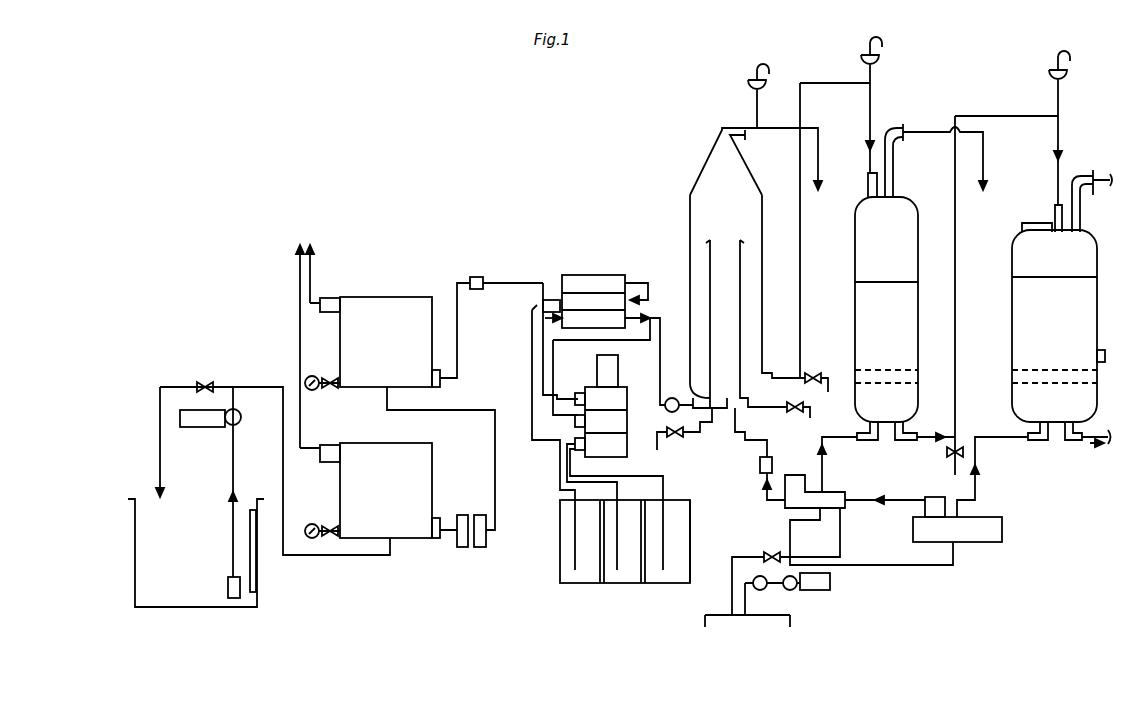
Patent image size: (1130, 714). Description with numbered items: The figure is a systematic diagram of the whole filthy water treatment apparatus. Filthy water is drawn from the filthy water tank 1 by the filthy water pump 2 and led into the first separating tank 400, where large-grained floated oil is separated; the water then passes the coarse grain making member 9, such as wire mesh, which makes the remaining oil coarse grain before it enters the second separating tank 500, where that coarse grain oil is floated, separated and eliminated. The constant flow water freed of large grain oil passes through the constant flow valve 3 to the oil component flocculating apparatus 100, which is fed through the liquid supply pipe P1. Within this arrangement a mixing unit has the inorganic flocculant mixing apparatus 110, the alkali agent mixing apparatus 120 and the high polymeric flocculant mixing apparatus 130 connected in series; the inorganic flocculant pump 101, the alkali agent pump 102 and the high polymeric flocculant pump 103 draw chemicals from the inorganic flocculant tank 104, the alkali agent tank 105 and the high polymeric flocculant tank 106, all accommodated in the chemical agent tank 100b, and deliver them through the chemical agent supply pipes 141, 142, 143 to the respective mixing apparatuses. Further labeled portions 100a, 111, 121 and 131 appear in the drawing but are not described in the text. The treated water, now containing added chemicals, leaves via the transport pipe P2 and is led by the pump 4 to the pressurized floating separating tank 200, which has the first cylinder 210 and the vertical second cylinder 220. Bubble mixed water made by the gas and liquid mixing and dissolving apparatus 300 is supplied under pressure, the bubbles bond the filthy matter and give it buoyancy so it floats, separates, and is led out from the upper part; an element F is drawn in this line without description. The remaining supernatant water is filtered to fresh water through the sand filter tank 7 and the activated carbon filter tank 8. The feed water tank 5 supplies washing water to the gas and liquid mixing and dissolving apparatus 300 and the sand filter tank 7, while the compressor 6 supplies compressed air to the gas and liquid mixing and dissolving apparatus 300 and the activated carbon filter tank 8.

The filthy water tank 1 is at (243, 498).
The filthy water pump 2 is at (241, 414).
The constant flow valve 3 is at (474, 291).
The pump 4 is at (665, 410).
The feed water tank 5 is at (775, 614).
The compressor 6 is at (990, 519).
The sand filter tank 7 is at (878, 312).
The activated carbon filter tank 8 is at (1042, 312).
The coarse grain making member 9 is at (470, 555).
The liquid supply pipe P1 is at (477, 277).
The transport pipe P2 is at (660, 375).
The flow meter F is at (758, 468).
The oil component flocculating apparatus 100 is at (586, 419).
The heat exchanger section 100a is at (617, 262).
The chemical agent tank 100b is at (623, 571).
The inorganic flocculant pump 101 is at (595, 390).
The alkali agent pump 102 is at (553, 414).
The high polymeric flocculant pump 103 is at (568, 462).
The inorganic flocculant tank 104 is at (583, 583).
The alkali agent tank 105 is at (624, 583).
The high polymeric flocculant tank 106 is at (670, 555).
The inorganic flocculant mixing apparatus 110 is at (597, 286).
The supply line 111 is at (543, 283).
The alkali agent mixing apparatus 120 is at (617, 320).
The return line 121 is at (648, 290).
The high polymeric flocculant mixing apparatus 130 is at (614, 277).
The inlet line 131 is at (543, 301).
The chemical agent supply pipe 141 is at (530, 319).
The chemical agent supply pipe 142 is at (553, 352).
The chemical agent supply pipe 143 is at (532, 378).
The pressurized floating separating tank 200 is at (742, 260).
The first cylinder 210 is at (744, 280).
The second cylinder 220 is at (750, 184).
The gas and liquid mixing and dissolving apparatus 300 is at (852, 514).
The first separating tank 400 is at (403, 545).
The second separating tank 500 is at (397, 297).